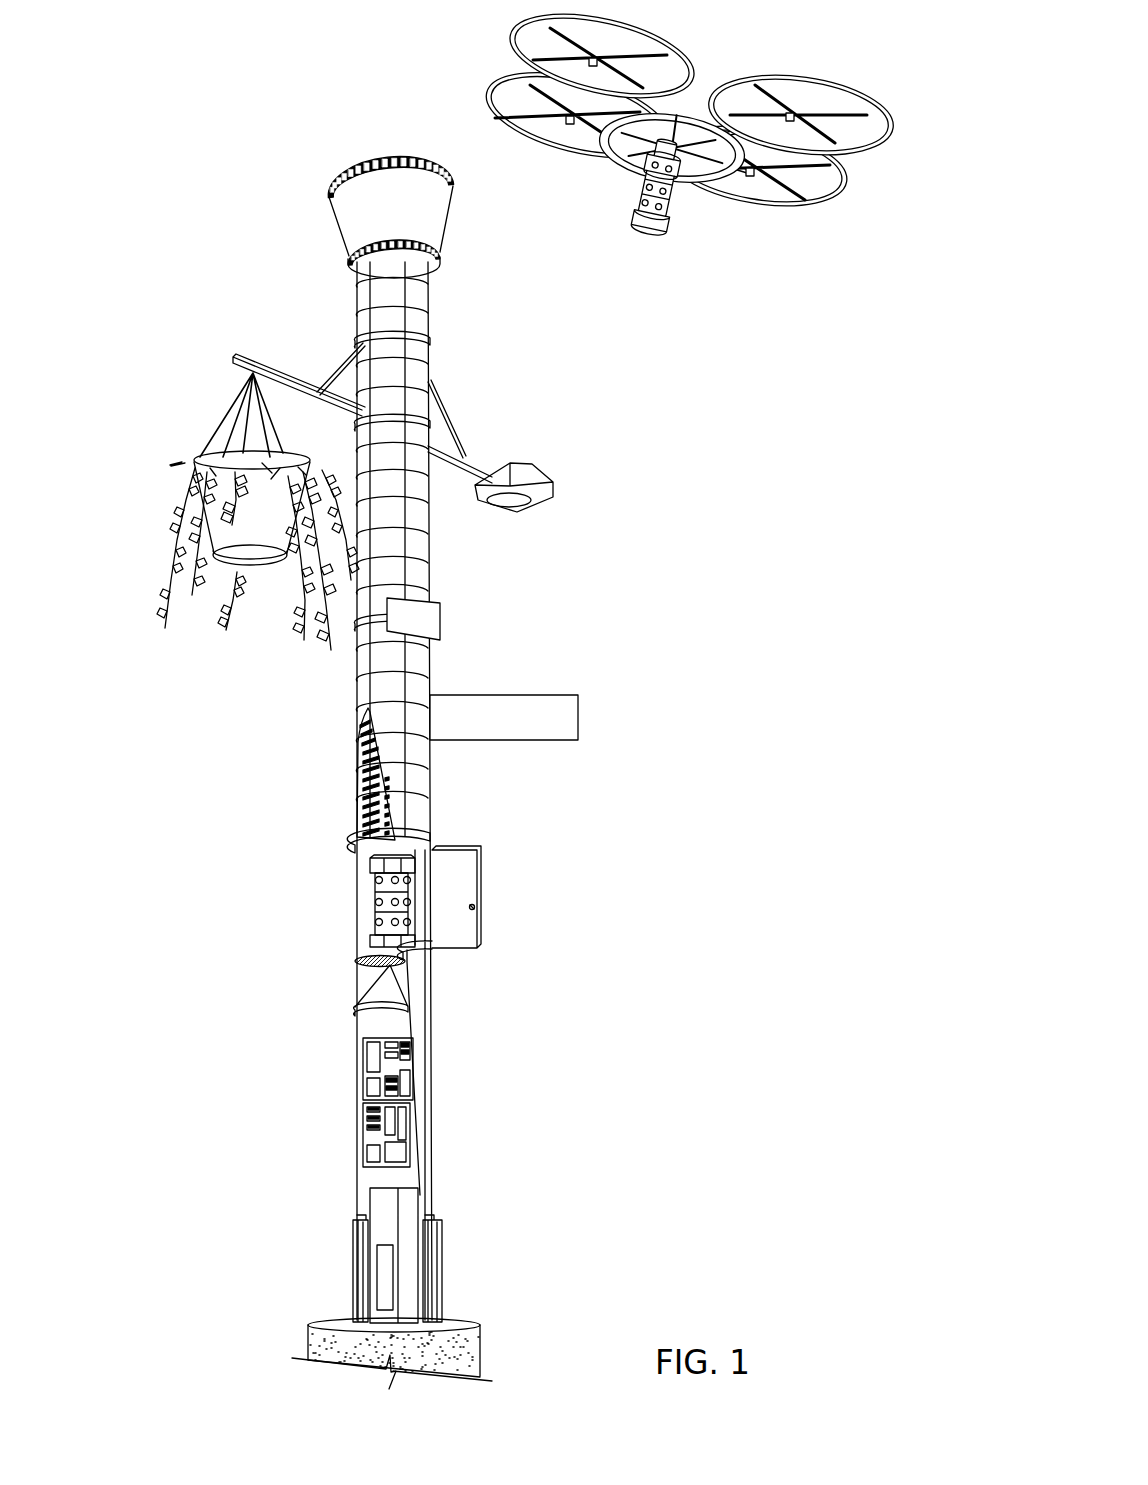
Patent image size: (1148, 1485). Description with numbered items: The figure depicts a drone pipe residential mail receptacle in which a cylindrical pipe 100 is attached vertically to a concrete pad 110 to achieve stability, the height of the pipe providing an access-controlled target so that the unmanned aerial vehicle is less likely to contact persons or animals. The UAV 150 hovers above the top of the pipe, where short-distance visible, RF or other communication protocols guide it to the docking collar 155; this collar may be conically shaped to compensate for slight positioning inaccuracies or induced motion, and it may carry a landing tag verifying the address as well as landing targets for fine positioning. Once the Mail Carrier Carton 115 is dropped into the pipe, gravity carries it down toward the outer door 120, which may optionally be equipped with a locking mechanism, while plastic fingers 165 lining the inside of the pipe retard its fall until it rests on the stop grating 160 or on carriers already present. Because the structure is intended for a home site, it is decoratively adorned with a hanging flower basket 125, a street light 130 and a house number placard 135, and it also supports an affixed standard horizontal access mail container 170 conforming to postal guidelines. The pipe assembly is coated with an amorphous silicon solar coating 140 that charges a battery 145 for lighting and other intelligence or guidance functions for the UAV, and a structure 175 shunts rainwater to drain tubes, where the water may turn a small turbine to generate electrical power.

The cylindrical pipe 100 is at (420, 1087).
The concrete pad 110 is at (455, 1352).
The Mail Carrier Carton (MCC) 115 is at (380, 917).
The outer door 120 is at (453, 870).
The hanging flower basket 125 is at (217, 477).
The street light 130 is at (533, 480).
The house number placard 135 is at (438, 642).
The amorphous silicon solar coating 140 is at (416, 573).
The battery 145 is at (407, 1210).
The UAV 150 is at (715, 173).
The docking collar 155 is at (345, 220).
The stop grating 160 is at (382, 958).
The plastic fingers 165 is at (395, 863).
The standard horizontal access mail container 170 is at (578, 702).
The structure for shunting rainwater 175 is at (377, 995).